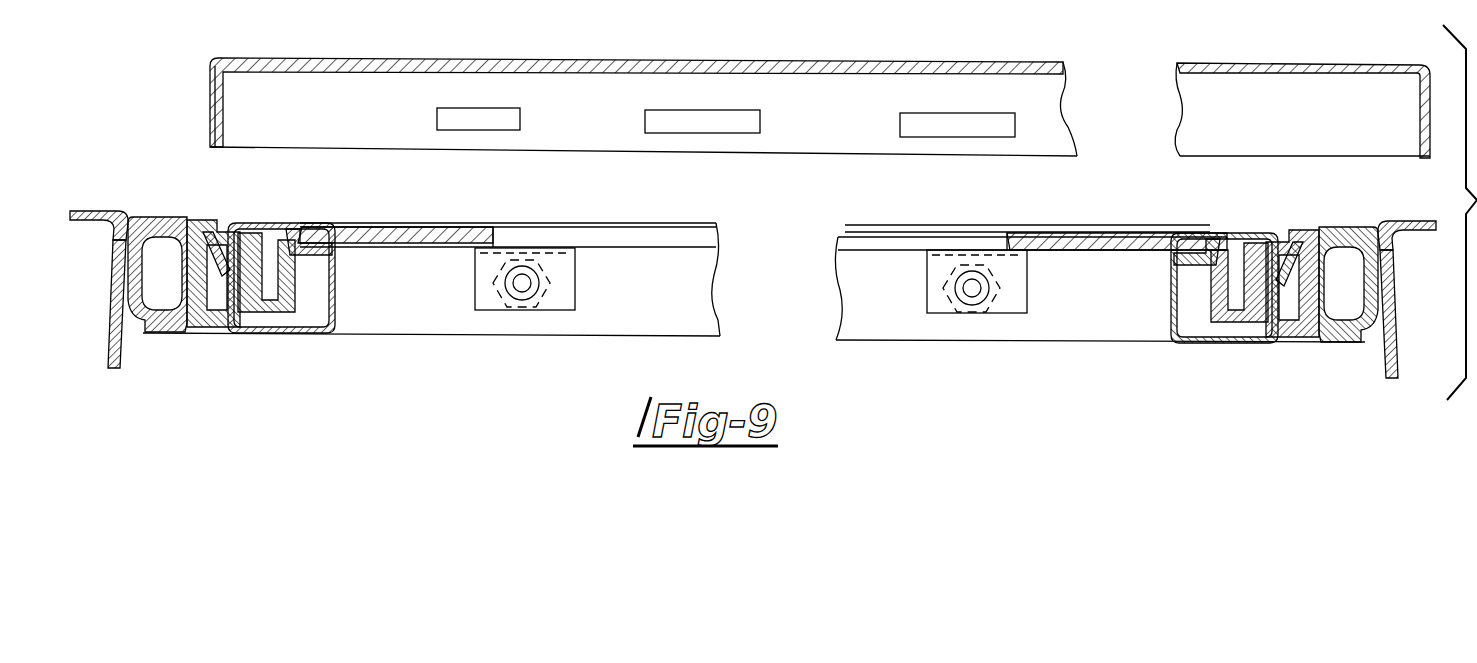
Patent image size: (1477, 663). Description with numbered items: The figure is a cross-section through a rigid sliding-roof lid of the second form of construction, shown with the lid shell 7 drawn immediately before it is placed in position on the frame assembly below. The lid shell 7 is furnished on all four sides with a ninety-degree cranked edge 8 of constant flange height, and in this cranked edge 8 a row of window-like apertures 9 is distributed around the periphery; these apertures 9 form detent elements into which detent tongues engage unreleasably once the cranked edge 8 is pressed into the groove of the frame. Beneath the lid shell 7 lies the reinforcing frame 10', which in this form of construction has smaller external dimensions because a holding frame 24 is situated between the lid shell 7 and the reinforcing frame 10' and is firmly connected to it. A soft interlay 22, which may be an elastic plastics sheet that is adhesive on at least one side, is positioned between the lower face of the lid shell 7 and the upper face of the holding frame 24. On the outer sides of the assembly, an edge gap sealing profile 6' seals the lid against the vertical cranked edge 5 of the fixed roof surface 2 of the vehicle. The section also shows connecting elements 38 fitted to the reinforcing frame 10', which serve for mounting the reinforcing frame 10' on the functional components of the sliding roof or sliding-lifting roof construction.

The fixed roof surface 2 is at (76, 212).
The vertical cranked edge 5 is at (111, 343).
The edge gap sealing profile 6' is at (753, 303).
The lid shell 7 is at (588, 58).
The cranked edge 8 is at (212, 88).
The window-like apertures 9 is at (223, 112).
The reinforcing frame 10' is at (754, 282).
The soft interlay 22 is at (348, 187).
The holding frame 24 is at (253, 222).
The connecting elements 38 is at (566, 297).